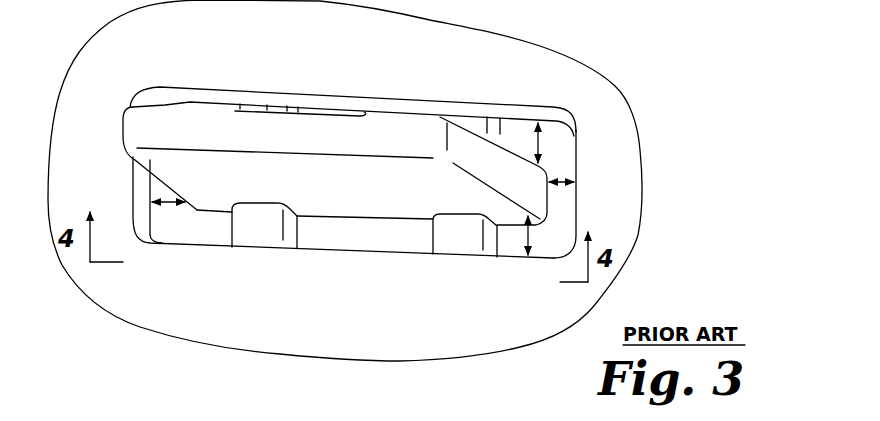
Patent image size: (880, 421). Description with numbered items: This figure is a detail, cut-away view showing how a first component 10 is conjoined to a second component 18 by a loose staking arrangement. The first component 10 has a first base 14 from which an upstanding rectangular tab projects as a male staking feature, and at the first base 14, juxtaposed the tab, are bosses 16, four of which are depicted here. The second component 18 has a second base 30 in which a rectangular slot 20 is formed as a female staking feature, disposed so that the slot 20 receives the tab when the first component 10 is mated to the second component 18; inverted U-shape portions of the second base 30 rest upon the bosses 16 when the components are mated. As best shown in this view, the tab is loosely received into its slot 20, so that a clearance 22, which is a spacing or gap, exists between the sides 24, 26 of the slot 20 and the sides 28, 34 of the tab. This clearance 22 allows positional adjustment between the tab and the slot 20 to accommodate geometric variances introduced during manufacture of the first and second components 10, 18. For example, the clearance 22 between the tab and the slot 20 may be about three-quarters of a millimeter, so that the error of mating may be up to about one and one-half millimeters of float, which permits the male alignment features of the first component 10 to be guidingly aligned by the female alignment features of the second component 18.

The first component 10 is at (205, 232).
The first base 14 is at (390, 240).
The bosses 16 is at (267, 108).
The second component 18 is at (630, 105).
The rectangular slot 20 is at (567, 195).
The clearance 22 is at (546, 120).
The side of the slot 24 is at (362, 107).
The side of the slot 26 is at (145, 180).
The side of the tab 28 is at (392, 112).
The second base 30 is at (228, 322).
The side of the tab 34 is at (123, 136).